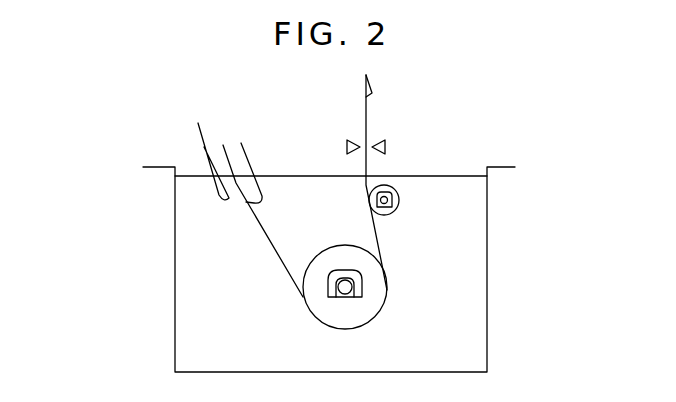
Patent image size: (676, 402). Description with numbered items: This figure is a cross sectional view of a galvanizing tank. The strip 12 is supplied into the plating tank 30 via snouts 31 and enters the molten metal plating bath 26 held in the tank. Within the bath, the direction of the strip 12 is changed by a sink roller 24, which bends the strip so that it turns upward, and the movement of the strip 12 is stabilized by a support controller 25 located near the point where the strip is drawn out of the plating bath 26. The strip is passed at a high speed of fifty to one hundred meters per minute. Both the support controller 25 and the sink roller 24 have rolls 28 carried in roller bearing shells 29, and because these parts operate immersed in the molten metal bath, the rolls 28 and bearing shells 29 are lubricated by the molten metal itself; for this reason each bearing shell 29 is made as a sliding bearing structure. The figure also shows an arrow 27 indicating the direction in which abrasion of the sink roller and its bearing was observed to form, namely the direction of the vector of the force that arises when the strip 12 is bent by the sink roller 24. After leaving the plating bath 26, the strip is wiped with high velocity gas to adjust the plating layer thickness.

The strip 12 is at (363, 108).
The sink roller 24 is at (322, 327).
The support controller 25 is at (400, 197).
The plating bath 26 is at (190, 227).
The wire travel direction arrows 27 is at (385, 147).
The rolls 28 is at (385, 208).
The roller bearing shells 29 is at (397, 206).
The plating tank 30 is at (173, 283).
The snouts 31 is at (192, 148).